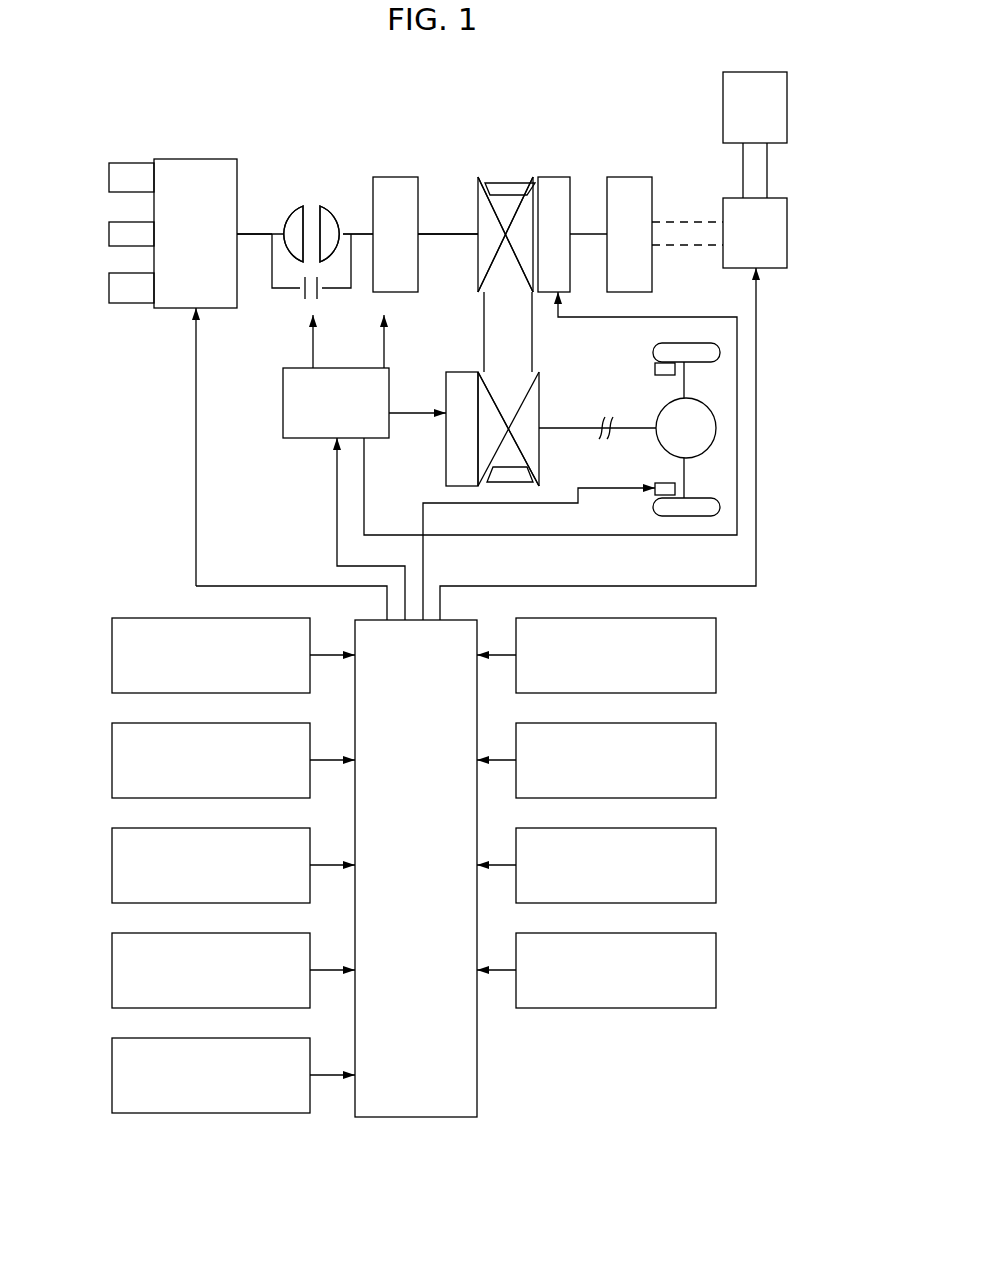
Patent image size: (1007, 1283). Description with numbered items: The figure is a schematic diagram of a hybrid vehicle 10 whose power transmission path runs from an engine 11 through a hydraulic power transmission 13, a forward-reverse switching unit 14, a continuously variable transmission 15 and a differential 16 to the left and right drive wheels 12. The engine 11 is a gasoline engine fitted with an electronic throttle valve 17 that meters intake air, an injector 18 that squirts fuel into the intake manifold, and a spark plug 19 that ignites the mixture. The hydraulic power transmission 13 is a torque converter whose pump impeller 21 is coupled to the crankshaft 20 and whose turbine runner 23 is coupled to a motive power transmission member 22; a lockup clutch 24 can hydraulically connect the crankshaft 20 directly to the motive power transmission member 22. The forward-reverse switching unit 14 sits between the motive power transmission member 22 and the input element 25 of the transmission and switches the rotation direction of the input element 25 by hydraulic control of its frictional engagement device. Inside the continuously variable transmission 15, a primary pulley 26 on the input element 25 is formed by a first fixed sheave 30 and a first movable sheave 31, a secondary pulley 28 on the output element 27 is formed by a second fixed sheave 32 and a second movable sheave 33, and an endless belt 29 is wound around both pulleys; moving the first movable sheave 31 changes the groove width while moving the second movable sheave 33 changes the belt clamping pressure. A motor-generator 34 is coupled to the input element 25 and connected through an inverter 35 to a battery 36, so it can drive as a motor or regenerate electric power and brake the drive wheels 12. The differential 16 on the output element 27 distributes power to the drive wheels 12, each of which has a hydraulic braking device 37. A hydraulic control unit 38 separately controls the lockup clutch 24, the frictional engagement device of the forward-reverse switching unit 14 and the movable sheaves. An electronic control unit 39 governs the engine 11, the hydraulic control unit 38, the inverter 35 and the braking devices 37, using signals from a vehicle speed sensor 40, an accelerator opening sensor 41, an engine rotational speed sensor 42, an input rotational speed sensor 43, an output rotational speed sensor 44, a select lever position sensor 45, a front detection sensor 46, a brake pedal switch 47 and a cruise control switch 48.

The vehicle 10 is at (263, 108).
The engine 11 is at (192, 158).
The drive wheels 12 is at (653, 350).
The hydraulic power transmission 13 is at (310, 187).
The forward-reverse switching unit 14 is at (393, 176).
The continuously variable transmission 15 is at (518, 167).
The differential 16 is at (672, 413).
The electronic throttle valve 17 is at (109, 177).
The injector 18 is at (109, 234).
The spark plug 19 is at (109, 289).
The crankshaft 20 is at (262, 232).
The pump impeller 21 is at (300, 202).
The motive power transmission member 22 is at (354, 232).
The turbine runner 23 is at (328, 202).
The lockup clutch 24 is at (289, 296).
The input element 25 is at (450, 232).
The primary pulley 26 is at (540, 147).
The output element 27 is at (571, 427).
The secondary pulley 28 is at (458, 362).
The endless belt 29 is at (497, 182).
The first fixed sheave 30 is at (492, 253).
The first movable sheave 31 is at (522, 263).
The second fixed sheave 32 is at (540, 467).
The second movable sheave 33 is at (493, 443).
The motor-generator 34 is at (653, 192).
The inverter 35 is at (723, 258).
The battery 36 is at (723, 105).
The braking devices 37 is at (655, 370).
The hydraulic control unit 38 is at (283, 402).
The electronic control unit 39 is at (477, 1075).
The vehicle speed sensor 40 is at (112, 655).
The accelerator opening sensor 41 is at (112, 760).
The engine rotational speed sensor 42 is at (112, 865).
The input rotational speed sensor 43 is at (112, 970).
The output rotational speed sensor 44 is at (716, 655).
The select lever position sensor 45 is at (716, 760).
The front detection sensor 46 is at (112, 1075).
The brake pedal switch 47 is at (716, 970).
The cruise control switch 48 is at (716, 865).